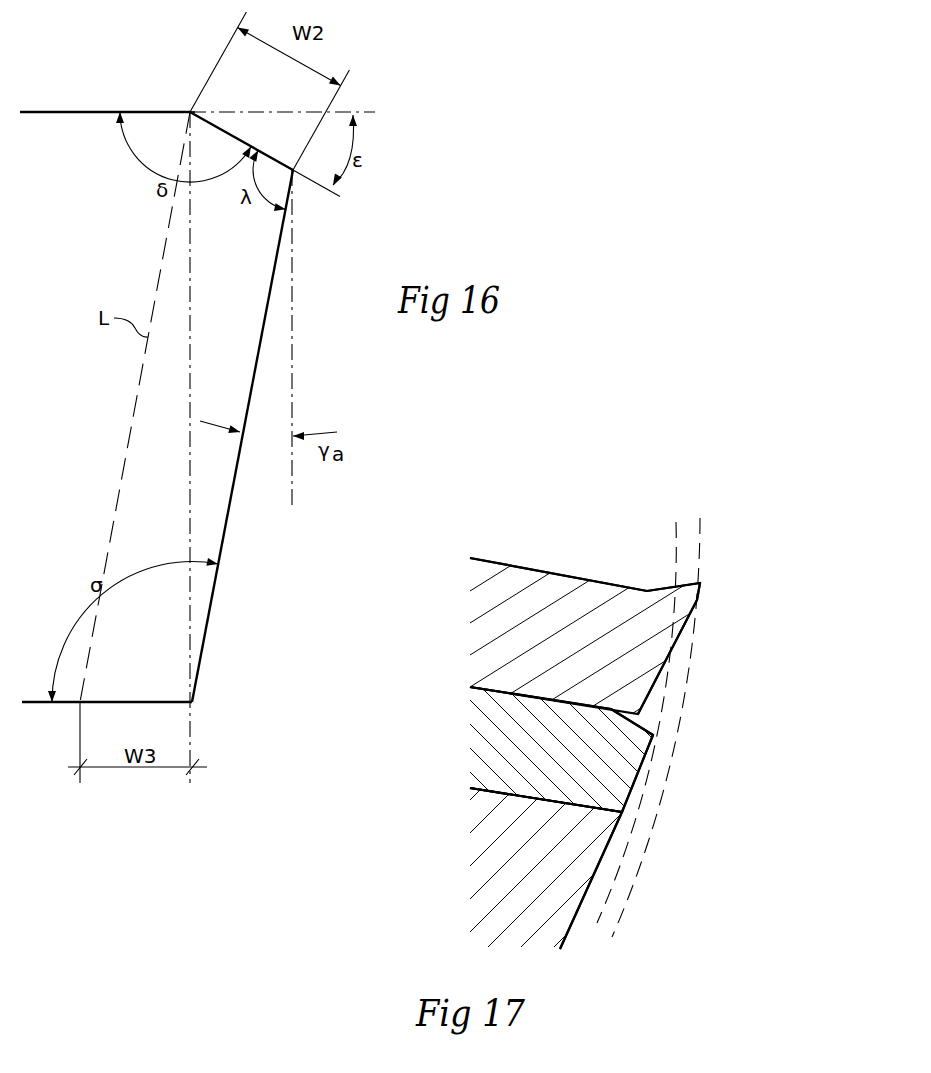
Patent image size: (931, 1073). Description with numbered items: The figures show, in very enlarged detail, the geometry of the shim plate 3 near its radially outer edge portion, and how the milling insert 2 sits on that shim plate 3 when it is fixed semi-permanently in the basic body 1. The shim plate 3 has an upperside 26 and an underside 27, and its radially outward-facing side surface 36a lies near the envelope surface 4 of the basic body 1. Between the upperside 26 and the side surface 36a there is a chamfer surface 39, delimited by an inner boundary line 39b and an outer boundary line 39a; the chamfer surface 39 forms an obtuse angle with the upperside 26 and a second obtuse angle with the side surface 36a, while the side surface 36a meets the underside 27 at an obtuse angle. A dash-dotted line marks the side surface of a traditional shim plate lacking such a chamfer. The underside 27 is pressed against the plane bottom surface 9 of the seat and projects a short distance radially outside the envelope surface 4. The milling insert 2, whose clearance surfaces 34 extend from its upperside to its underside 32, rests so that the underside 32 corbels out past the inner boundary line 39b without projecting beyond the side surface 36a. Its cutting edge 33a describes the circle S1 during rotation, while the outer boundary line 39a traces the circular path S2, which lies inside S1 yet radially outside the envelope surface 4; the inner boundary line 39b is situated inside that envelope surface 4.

In FIG. 16, the upperside 26 is at (85, 112).
In FIG. 17, the upperside 26 is at (504, 690).
In FIG. 16, the inner boundary line 39b is at (190, 112).
In FIG. 17, the inner boundary line 39b is at (609, 706).
In FIG. 16, the chamfer surface 39 is at (238, 139).
In FIG. 17, the chamfer surface 39 is at (645, 728).
In FIG. 16, the outer boundary line 39a is at (297, 172).
In FIG. 17, the outer boundary line 39a is at (655, 736).
In FIG. 16, the side surface 36a is at (228, 523).
In FIG. 17, the side surface 36a is at (638, 778).
In FIG. 16, the underside 27 is at (36, 705).
In FIG. 17, the underside 27 is at (545, 802).
In FIG. 17, the basic body 1 is at (452, 855).
In FIG. 17, the milling insert 2 is at (450, 618).
In FIG. 17, the shim plate 3 is at (452, 733).
In FIG. 17, the envelope surface 4 is at (604, 842).
In FIG. 17, the bottom surface 9 is at (557, 797).
In FIG. 17, the underside 32 is at (552, 702).
In FIG. 17, the cutting edge 33a is at (699, 581).
In FIG. 17, the clearance surface 34 is at (660, 668).
In FIG. 17, the circle S1 is at (700, 530).
In FIG. 17, the circle S2 is at (676, 540).